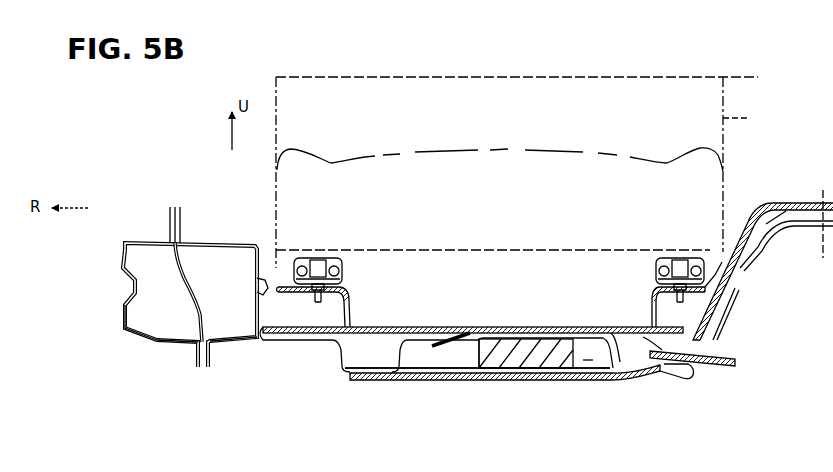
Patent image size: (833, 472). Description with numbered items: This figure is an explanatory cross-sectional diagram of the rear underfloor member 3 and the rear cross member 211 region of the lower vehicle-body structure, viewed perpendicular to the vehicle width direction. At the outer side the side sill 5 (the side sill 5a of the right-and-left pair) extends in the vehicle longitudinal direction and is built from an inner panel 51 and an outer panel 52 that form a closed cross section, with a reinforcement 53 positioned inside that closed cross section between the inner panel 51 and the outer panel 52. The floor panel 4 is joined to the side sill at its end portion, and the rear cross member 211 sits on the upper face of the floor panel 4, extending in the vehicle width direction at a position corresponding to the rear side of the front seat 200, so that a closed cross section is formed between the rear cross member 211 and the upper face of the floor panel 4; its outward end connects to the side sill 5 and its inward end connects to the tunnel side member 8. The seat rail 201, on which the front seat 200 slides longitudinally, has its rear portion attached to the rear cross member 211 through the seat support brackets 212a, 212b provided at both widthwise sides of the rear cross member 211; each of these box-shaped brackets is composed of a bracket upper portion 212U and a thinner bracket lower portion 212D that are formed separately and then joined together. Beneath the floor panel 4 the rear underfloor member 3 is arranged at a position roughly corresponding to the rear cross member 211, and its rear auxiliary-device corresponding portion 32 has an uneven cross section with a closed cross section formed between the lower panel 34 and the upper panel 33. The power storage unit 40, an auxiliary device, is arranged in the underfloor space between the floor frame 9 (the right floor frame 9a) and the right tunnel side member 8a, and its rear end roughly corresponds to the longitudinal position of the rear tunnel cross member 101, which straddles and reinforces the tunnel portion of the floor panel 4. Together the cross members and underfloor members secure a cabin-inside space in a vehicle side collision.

The front seat 200 is at (753, 115).
The seat support bracket 212a is at (273, 264).
The seat support bracket 212b is at (712, 252).
The seat rail 201 is at (344, 273).
The bracket upper portion 212U is at (351, 303).
The bracket lower portion 212D is at (351, 320).
The floor panel 4 is at (417, 339).
The rear cross member 211 is at (443, 328).
The power storage unit 40 is at (475, 355).
The floor frame 9 is at (456, 363).
The floor frame 9a is at (347, 355).
The side sill 5 is at (182, 302).
The side sill 5a is at (171, 350).
The inner panel 51 is at (226, 347).
The outer panel 52 is at (144, 339).
The reinforcement 53 is at (205, 318).
The rear auxiliary-device corresponding portion 32 is at (487, 384).
The upper panel 33 is at (570, 380).
The lower panel 34 is at (522, 382).
The tunnel side member 8 is at (659, 372).
The tunnel side member 8a is at (605, 357).
The rear underfloor member 3 is at (678, 393).
The rear tunnel cross member 101 is at (728, 323).